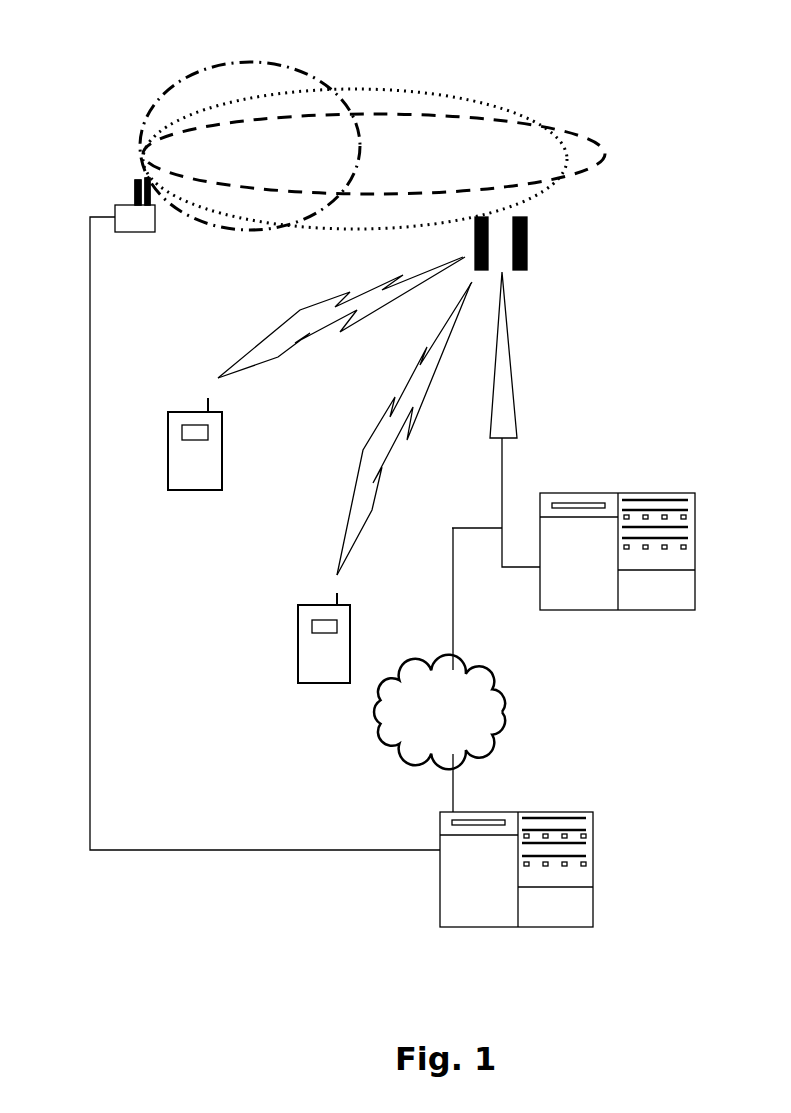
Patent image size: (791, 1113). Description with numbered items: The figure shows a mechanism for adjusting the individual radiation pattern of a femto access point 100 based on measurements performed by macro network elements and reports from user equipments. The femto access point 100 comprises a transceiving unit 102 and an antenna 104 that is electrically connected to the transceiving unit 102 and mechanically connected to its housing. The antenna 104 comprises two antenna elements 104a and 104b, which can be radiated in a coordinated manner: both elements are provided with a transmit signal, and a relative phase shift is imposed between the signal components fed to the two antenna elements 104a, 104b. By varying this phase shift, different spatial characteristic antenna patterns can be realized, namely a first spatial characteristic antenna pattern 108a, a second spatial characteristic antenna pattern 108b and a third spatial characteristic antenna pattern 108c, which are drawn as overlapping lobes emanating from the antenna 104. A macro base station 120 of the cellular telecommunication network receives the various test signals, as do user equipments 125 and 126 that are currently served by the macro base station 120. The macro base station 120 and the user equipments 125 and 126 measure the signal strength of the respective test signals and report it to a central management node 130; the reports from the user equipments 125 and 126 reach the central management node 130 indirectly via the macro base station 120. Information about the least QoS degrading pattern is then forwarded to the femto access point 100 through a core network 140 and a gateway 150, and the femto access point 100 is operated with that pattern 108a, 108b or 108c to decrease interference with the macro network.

The femto access point 100 is at (94, 177).
The transceiving unit 102 is at (131, 232).
The antenna 104 is at (126, 182).
The antenna element 104a is at (137, 180).
The antenna element 104b is at (150, 200).
The first spatial characteristic antenna pattern 108a is at (598, 132).
The second spatial characteristic antenna pattern 108b is at (455, 90).
The third spatial characteristic antenna pattern 108c is at (280, 62).
The macro base station 120 is at (546, 238).
The user equipment 125 is at (192, 490).
The user equipment 126 is at (318, 683).
The central management node 130 is at (612, 493).
The core network 140 is at (505, 688).
The gateway 150 is at (527, 812).